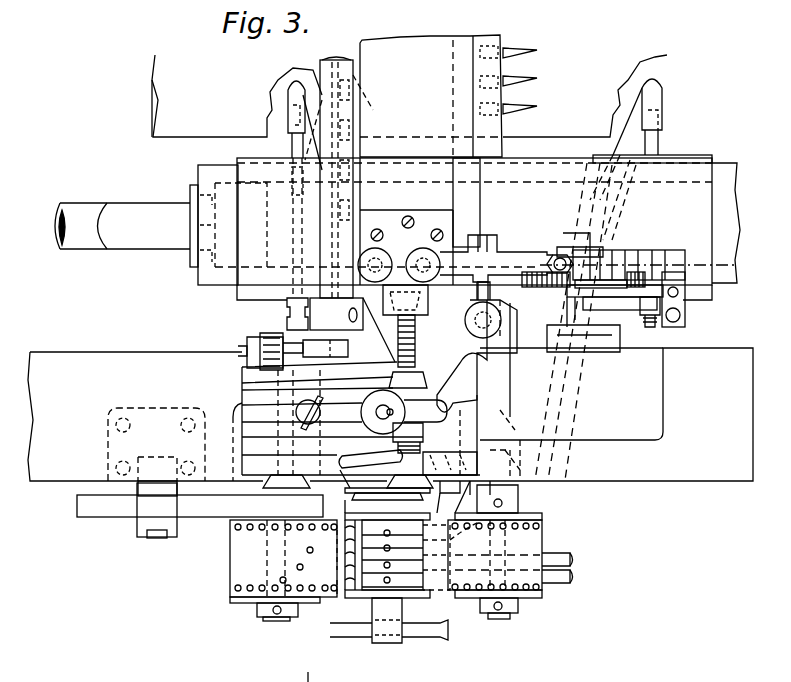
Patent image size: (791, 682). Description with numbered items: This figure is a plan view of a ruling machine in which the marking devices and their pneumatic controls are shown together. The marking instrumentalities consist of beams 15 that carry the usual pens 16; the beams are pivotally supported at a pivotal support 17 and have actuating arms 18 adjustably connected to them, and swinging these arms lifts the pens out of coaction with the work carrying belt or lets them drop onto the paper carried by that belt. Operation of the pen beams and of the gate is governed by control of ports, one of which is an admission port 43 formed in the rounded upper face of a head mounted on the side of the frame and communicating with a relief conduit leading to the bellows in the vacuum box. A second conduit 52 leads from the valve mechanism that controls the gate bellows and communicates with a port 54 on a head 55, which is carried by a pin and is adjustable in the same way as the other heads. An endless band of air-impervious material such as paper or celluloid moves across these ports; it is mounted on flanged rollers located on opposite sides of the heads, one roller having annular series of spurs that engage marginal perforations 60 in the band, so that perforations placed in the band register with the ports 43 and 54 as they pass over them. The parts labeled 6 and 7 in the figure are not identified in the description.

The beams 15 is at (440, 42).
The pens 16 is at (520, 52).
The conduit 52 is at (290, 95).
The actuating arms 18 is at (502, 260).
The pivotal support 17 is at (428, 300).
The head 55 is at (383, 488).
The port 54 is at (387, 533).
The admission port 43 is at (385, 583).
The marginal perforations 60 is at (275, 528).
The rollers 6 is at (222, 577).
The support 7 is at (315, 668).